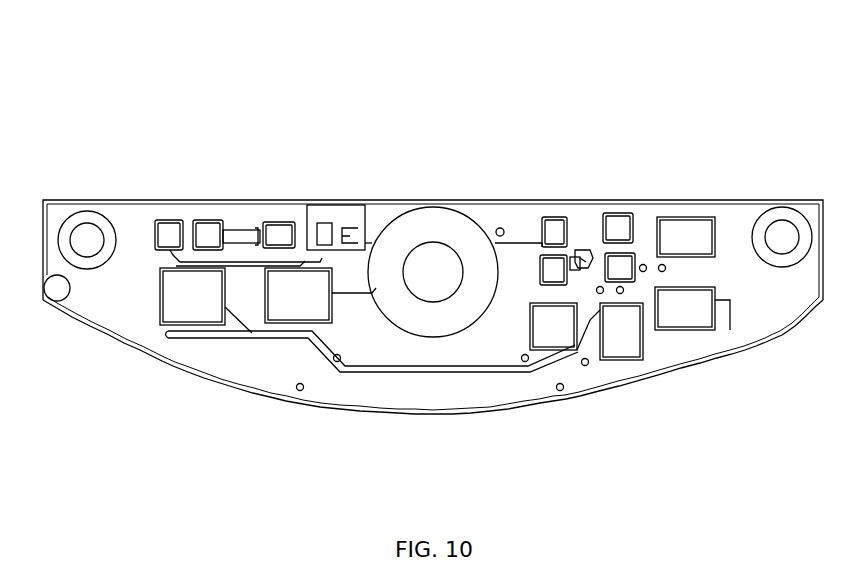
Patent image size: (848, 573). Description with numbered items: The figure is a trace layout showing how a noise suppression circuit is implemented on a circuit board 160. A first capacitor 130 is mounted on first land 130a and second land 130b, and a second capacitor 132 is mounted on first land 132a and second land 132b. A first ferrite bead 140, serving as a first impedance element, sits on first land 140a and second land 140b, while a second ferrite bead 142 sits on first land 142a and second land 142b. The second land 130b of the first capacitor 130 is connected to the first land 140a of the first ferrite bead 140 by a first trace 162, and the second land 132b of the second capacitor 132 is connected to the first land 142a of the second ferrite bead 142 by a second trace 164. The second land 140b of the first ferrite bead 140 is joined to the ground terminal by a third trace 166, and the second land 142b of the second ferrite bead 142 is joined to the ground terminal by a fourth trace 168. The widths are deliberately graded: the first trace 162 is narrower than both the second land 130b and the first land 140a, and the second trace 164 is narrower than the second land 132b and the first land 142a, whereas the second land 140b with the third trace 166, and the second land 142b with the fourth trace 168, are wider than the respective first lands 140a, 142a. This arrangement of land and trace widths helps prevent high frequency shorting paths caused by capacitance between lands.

The circuit board 160 is at (419, 253).
The first capacitor 130 is at (235, 63).
The first land of first capacitor 130a is at (167, 232).
The second land of first capacitor 130b is at (203, 233).
The first ferrite bead 140 is at (252, 62).
The first land of first ferrite bead 140a is at (280, 232).
The second land of first ferrite bead 140b is at (322, 230).
The second ferrite bead 142 is at (458, 55).
The first land of second ferrite bead 142a is at (540, 270).
The second land of second ferrite bead 142b is at (557, 230).
The second capacitor 132 is at (792, 70).
The first land of second capacitor 132a is at (620, 267).
The second land of second capacitor 132b is at (619, 230).
The first trace 162 is at (237, 233).
The second trace 164 is at (585, 250).
The third trace 166 is at (372, 220).
The fourth trace 168 is at (497, 222).